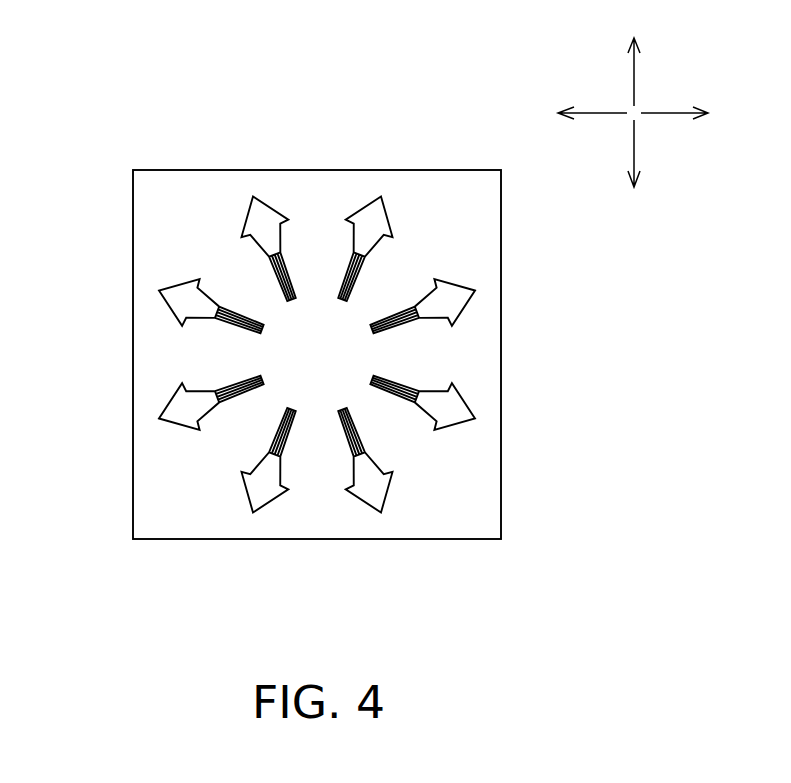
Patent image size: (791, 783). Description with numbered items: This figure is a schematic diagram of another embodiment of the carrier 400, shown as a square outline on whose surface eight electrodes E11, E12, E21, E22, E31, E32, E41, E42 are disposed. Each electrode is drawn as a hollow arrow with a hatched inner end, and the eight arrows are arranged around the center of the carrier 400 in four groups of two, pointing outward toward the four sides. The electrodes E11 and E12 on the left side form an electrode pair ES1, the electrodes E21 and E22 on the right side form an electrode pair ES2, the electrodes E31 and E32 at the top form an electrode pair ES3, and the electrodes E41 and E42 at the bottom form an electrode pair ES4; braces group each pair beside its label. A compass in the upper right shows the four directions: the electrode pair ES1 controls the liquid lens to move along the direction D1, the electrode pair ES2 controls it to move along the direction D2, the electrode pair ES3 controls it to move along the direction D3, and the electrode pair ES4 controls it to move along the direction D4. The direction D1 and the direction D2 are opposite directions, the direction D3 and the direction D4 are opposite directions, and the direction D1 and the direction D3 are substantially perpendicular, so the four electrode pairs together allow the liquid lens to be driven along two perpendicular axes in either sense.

The carrier 400 is at (693, 655).
The electrode pair ES1 is at (70, 298).
The electrode pair ES2 is at (565, 298).
The electrode pair ES3 is at (375, 110).
The electrode pair ES4 is at (375, 601).
The electrode E11 is at (178, 295).
The electrode E12 is at (177, 409).
The electrode E21 is at (456, 296).
The electrode E22 is at (454, 409).
The electrode E31 is at (279, 215).
The electrode E32 is at (357, 216).
The electrode E41 is at (277, 490).
The electrode E42 is at (360, 490).
The direction D1 is at (577, 113).
The direction D2 is at (691, 113).
The direction D3 is at (633, 53).
The direction D4 is at (633, 173).